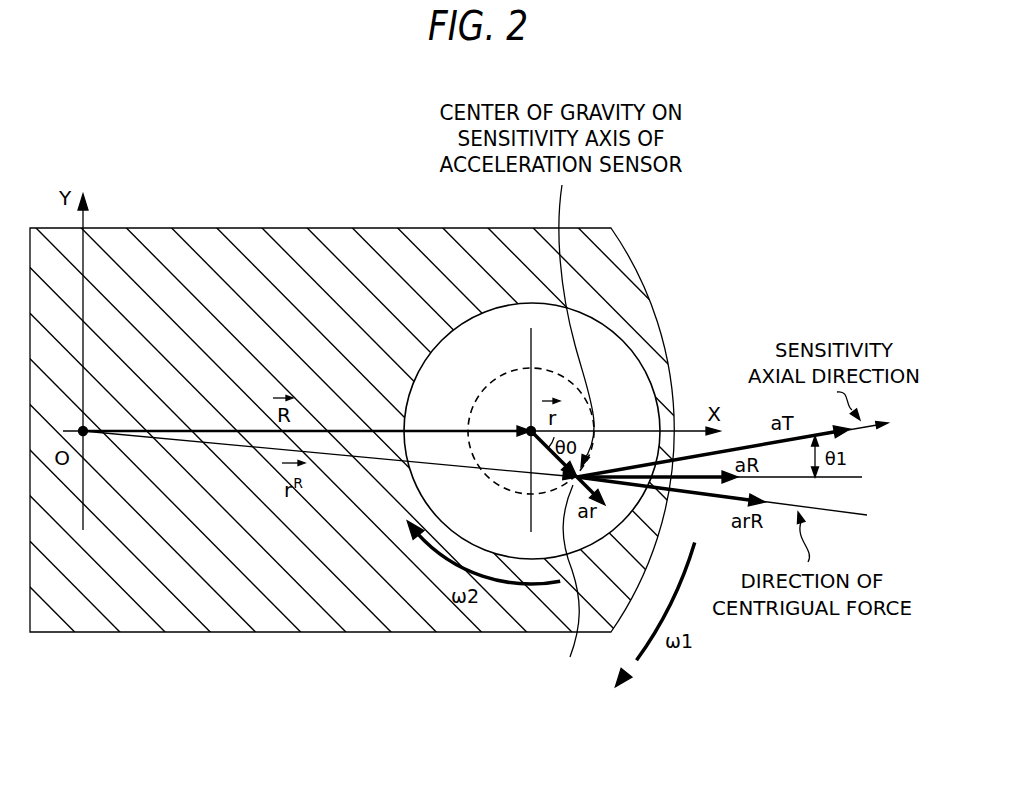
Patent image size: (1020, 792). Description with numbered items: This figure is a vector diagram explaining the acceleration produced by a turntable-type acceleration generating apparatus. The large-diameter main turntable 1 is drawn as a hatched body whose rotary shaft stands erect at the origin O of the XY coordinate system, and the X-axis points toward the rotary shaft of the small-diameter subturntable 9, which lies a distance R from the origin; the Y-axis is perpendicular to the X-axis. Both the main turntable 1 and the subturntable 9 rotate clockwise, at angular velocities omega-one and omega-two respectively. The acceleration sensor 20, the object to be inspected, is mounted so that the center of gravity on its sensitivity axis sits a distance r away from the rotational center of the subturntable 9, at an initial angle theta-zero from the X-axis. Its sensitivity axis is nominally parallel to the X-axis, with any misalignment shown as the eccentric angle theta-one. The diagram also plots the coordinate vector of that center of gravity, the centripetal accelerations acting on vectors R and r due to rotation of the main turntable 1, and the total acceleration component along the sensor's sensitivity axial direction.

The main turntable 1 is at (632, 253).
The subturntable 9 is at (612, 350).
The acceleration sensor 20 is at (568, 588).